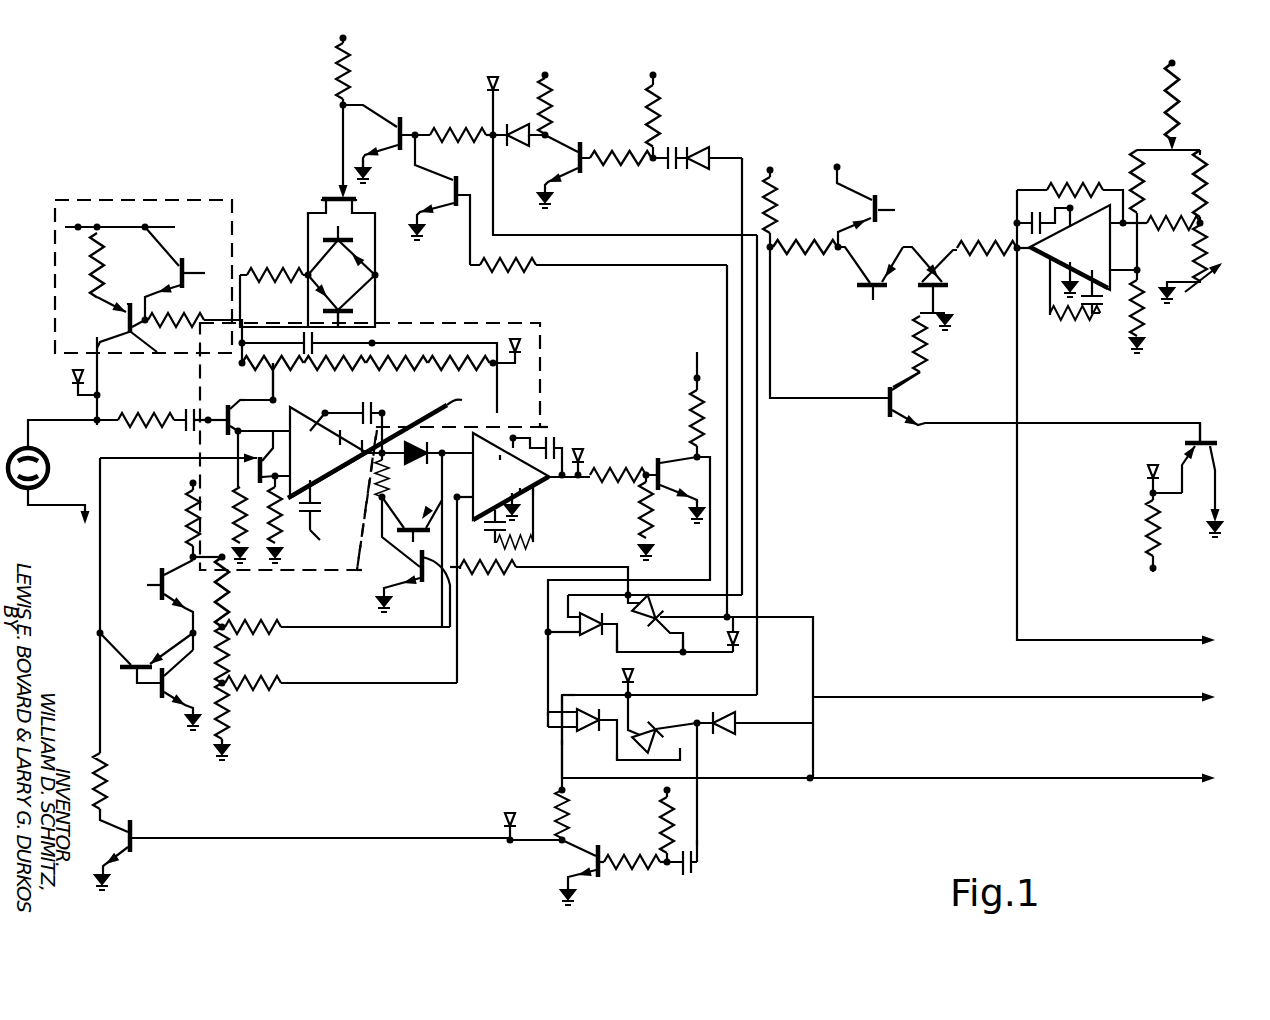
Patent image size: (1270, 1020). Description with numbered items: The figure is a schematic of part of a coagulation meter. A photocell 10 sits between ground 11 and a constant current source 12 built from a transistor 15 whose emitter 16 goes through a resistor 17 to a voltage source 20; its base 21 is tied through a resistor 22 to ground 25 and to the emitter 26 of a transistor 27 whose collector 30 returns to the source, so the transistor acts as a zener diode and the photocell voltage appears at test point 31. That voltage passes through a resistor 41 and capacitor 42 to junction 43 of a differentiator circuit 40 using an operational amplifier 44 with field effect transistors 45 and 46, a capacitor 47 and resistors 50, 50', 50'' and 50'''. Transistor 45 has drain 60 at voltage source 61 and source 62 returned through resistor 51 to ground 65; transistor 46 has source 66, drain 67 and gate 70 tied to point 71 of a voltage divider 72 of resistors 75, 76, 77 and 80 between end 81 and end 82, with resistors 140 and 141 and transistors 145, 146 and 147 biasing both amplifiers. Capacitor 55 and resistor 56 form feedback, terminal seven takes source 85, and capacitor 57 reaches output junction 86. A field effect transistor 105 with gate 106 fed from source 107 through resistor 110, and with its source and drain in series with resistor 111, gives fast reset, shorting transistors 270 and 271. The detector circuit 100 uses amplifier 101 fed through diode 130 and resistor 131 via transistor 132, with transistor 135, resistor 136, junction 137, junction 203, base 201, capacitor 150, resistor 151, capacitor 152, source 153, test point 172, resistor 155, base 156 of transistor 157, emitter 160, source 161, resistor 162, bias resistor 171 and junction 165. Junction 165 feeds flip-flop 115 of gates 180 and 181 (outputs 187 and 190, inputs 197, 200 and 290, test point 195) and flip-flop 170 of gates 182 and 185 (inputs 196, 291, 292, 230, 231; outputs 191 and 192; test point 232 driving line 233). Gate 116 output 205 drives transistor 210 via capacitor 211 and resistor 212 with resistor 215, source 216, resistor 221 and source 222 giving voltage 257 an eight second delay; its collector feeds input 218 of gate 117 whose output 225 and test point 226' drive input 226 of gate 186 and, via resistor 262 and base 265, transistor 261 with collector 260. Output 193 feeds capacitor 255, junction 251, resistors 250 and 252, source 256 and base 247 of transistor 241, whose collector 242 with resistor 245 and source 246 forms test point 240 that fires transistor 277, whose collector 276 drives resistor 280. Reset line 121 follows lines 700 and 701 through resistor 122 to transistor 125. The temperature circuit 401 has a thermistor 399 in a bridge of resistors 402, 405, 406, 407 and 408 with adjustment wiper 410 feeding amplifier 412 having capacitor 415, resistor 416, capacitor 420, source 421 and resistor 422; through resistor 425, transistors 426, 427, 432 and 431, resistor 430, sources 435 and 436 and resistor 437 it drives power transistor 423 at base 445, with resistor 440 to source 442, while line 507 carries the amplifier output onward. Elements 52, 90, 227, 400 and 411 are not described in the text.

The photocell 10 is at (49, 457).
The ground 11 is at (82, 523).
The constant current source 12 is at (120, 196).
The transistor 15 is at (108, 322).
The emitter 16 is at (128, 303).
The resistor 17 is at (95, 255).
The voltage source 20 is at (78, 225).
The base 21 is at (157, 354).
The resistor 22 is at (170, 316).
The ground 25 is at (232, 340).
The emitter 26 is at (178, 262).
The transistor 27 is at (210, 255).
The collector 30 is at (185, 255).
The test point 31 is at (72, 372).
The differentiator circuit 40 is at (552, 338).
The resistor 41 is at (548, 313).
The capacitor 42 is at (210, 410).
The junction 43 is at (172, 432).
The operational amplifier 44 is at (327, 410).
The field effect transistor 45 is at (234, 402).
The field effect transistor 46 is at (200, 462).
The capacitor 47 is at (318, 350).
The resistor 50 is at (288, 373).
The resistor 50' is at (341, 373).
The resistor 50'' is at (397, 374).
The resistor 50''' is at (462, 373).
The resistor 51 is at (270, 548).
The lead 52 is at (318, 542).
The capacitor 55 is at (307, 526).
The resistor 56 is at (343, 572).
The capacitor 57 is at (367, 444).
The drain 60 is at (236, 417).
The voltage source 61 is at (274, 395).
The source 62 is at (206, 425).
The ground 65 is at (238, 594).
The source 66 is at (310, 455).
The drain 67 is at (266, 455).
The gate 70 is at (252, 497).
The intermediate point 71 is at (190, 553).
The voltage divider 72 is at (242, 728).
The resistor 75 is at (190, 518).
The resistor 76 is at (208, 607).
The resistor 77 is at (226, 655).
The resistor 80 is at (228, 715).
The end of voltage divider 81 is at (190, 483).
The end of voltage divider 82 is at (230, 754).
The constant voltage source 85 is at (368, 402).
The output junction 86 is at (460, 401).
The conductor 90 is at (102, 522).
The stop detector circuit 100 is at (528, 440).
The operational amplifier 101 is at (548, 480).
The field effect transistor 105 is at (368, 196).
The gate 106 is at (322, 196).
The constant voltage source 107 is at (374, 43).
The resistor 110 is at (370, 76).
The resistor 111 is at (262, 272).
The flip-flop circuit 115 is at (540, 647).
The gate 116 is at (715, 145).
The gate 117 is at (523, 122).
The line 121 is at (1140, 777).
The resistor 122 is at (520, 262).
The transistor 125 is at (441, 222).
The diode 130 is at (425, 462).
The resistor 131 is at (388, 495).
The transistor 132 is at (430, 516).
The transistor 135 is at (412, 592).
The resistor 136 is at (518, 568).
The junction 137 is at (650, 595).
The resistor 140 is at (270, 630).
The resistor 141 is at (282, 680).
The transistor 145 is at (140, 592).
The transistor 146 is at (112, 653).
The transistor 147 is at (160, 712).
The capacitor 150 is at (590, 505).
The resistor 151 is at (515, 530).
The capacitor 152 is at (556, 436).
The constant voltage source 153 is at (523, 430).
The resistor 155 is at (606, 458).
The base 156 is at (650, 455).
The transistor 157 is at (672, 502).
The emitter 160 is at (680, 489).
The constant voltage source 161 is at (697, 370).
The resistor 162 is at (695, 405).
The junction 165 is at (546, 630).
The flip-flop circuit 170 is at (540, 733).
The bias resistor 171 is at (640, 510).
The test point 172 is at (583, 448).
The gate 180 is at (590, 642).
The gate 181 is at (655, 645).
The gate 182 is at (612, 745).
The gate 185 is at (655, 725).
The gate 186 is at (737, 735).
The output terminal 187 is at (656, 626).
The output terminal 190 is at (655, 623).
The output terminal 191 is at (614, 728).
The output terminal 192 is at (659, 741).
The output terminal 193 is at (700, 790).
The test point 195 is at (768, 617).
The input terminal 196 is at (545, 712).
The input 197 is at (730, 632).
The input terminal 200 is at (758, 560).
The base 201 is at (457, 630).
The junction 203 is at (377, 430).
The output terminal 205 is at (690, 145).
The transistor 210 is at (568, 133).
The capacitor 211 is at (684, 145).
The resistor 212 is at (608, 152).
The resistor 215 is at (668, 140).
The constant voltage source 216 is at (652, 72).
The input pin 218 is at (535, 140).
The resistor 221 is at (552, 95).
The constant voltage source 222 is at (550, 72).
The output pin 225 is at (512, 120).
The input pin 226 is at (779, 711).
The test point 226' is at (461, 98).
The conductor 227 is at (625, 235).
The input terminal 230 is at (647, 798).
The input 231 is at (690, 718).
The test point 232 is at (622, 680).
The line 233 is at (835, 697).
The test point 240 is at (505, 818).
The transistor 241 is at (555, 873).
The collector 242 is at (558, 845).
The resistor 245 is at (568, 815).
The constant voltage source 246 is at (558, 792).
The base 247 is at (603, 870).
The resistor 250 is at (660, 868).
The junction 251 is at (650, 855).
The resistor 252 is at (675, 840).
The capacitor 255 is at (700, 862).
The constant voltage source 256 is at (700, 830).
The voltage 257 is at (580, 170).
The collector 260 is at (372, 115).
The transistor 261 is at (415, 130).
The resistor 262 is at (445, 128).
The base 265 is at (395, 160).
The transistor 270 is at (362, 258).
The transistor 271 is at (360, 298).
The collector 276 is at (110, 812).
The transistor 277 is at (148, 826).
The resistor 280 is at (108, 765).
The input 290 is at (485, 570).
The input 291 is at (560, 698).
The input terminal 292 is at (560, 745).
The thermistor 399 is at (1222, 270).
The operational amplifier 400 is at (1078, 251).
The circuit 401 is at (1208, 148).
The resistor 402 is at (1205, 195).
The resistor 405 is at (1180, 140).
The resistor 406 is at (1142, 190).
The resistor 407 is at (1142, 312).
The resistor 408 is at (1215, 240).
The adjustment wiper 410 is at (1170, 140).
The supply terminal 411 is at (1175, 60).
The operational amplifier 412 is at (1065, 348).
The capacitor 415 is at (1098, 315).
The resistor 416 is at (1058, 320).
The capacitor 420 is at (1020, 218).
The constant voltage source 421 is at (1065, 206).
The resistor 422 is at (1072, 201).
The power transistor 423 is at (1205, 425).
The resistor 425 is at (978, 262).
The transistor 426 is at (928, 248).
The transistor 427 is at (884, 258).
The resistor 430 is at (800, 255).
The transistor 431 is at (888, 380).
The transistor 432 is at (860, 185).
The constant voltage source 435 is at (840, 165).
The constant voltage source 436 is at (772, 167).
The resistor 437 is at (778, 200).
The resistor 440 is at (1148, 535).
The constant voltage source 442 is at (1155, 572).
The base 445 is at (1212, 440).
The input line 507 is at (1165, 640).
The line 700 is at (815, 632).
The line 701 is at (760, 510).